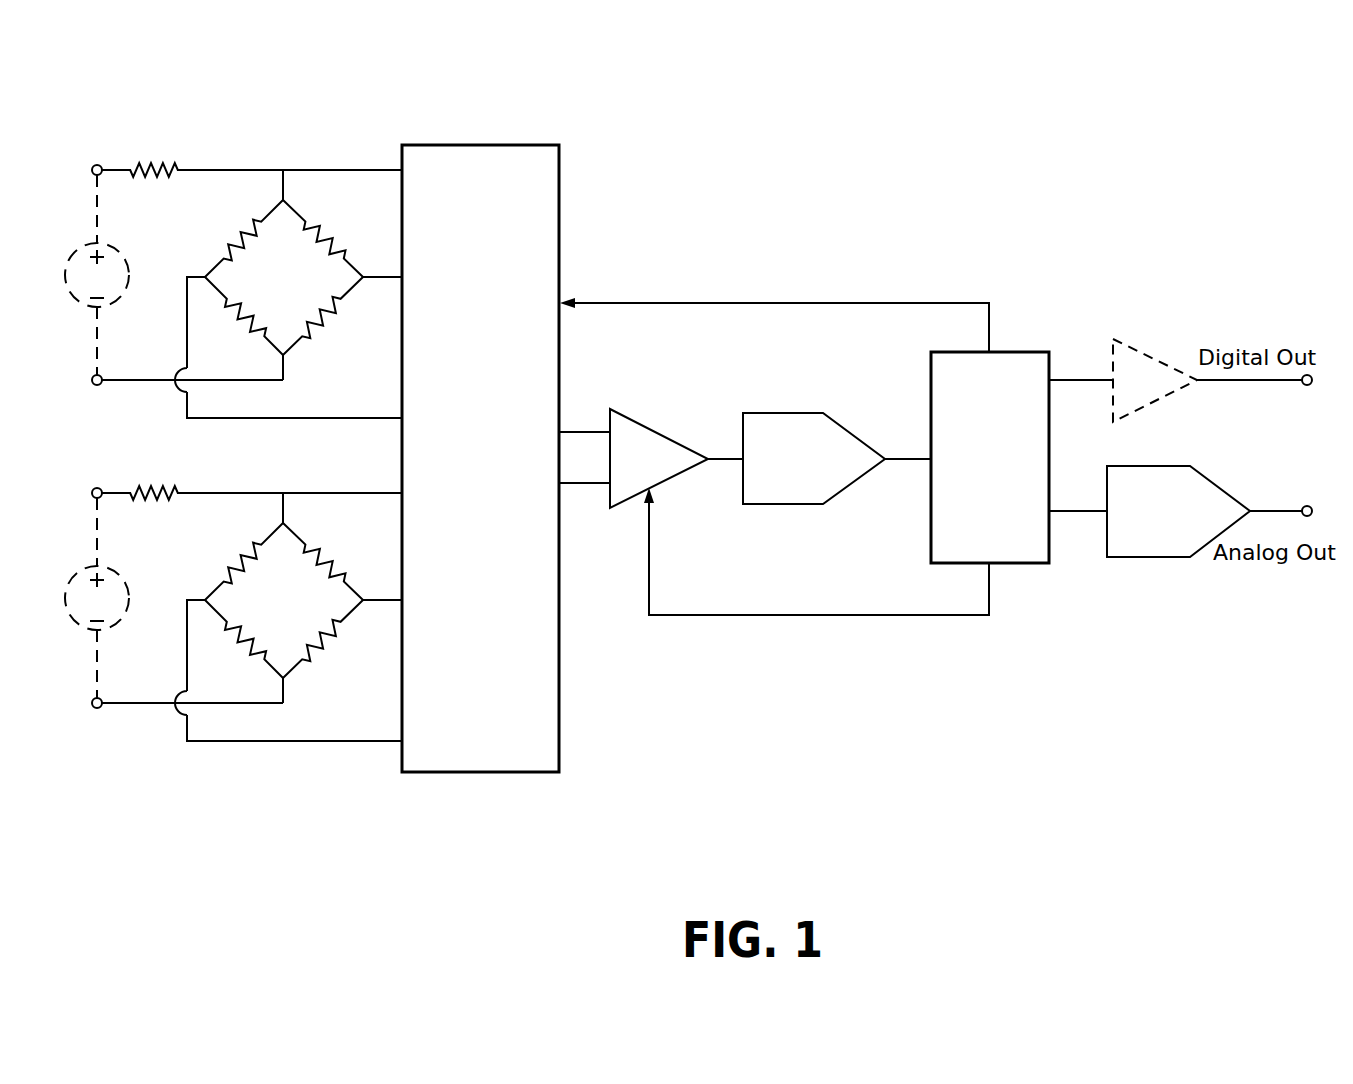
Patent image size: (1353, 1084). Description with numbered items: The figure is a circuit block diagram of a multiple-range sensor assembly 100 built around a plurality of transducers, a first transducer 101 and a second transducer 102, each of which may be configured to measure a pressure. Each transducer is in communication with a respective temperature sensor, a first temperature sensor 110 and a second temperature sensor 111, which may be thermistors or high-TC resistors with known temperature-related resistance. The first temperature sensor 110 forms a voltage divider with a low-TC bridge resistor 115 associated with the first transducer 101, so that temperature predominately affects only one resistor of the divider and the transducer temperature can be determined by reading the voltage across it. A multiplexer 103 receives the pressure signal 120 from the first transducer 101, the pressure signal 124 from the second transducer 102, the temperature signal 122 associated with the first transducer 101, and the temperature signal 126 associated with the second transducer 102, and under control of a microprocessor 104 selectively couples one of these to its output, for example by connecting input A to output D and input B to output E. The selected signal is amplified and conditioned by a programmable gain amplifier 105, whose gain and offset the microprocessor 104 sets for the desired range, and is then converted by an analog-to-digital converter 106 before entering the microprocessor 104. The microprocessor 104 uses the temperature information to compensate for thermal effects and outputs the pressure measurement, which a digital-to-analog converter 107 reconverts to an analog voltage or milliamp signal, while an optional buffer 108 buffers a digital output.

The multiple-range sensor assembly 100 is at (795, 110).
The first transducer 101 is at (295, 275).
The second transducer 102 is at (284, 600).
The multiplexer 103 is at (502, 182).
The microprocessor 104 is at (1007, 396).
The programmable gain amplifier 105 is at (625, 414).
The analog-to-digital converter 106 is at (812, 447).
The digital-to-analog converter 107 is at (1179, 502).
The buffer 108 is at (1165, 391).
The first temperature sensor 110 is at (150, 163).
The second temperature sensor 111 is at (170, 471).
The bridge resistor 115 is at (313, 221).
The pressure signal 120 is at (375, 290).
The temperature signal 122 is at (430, 189).
The pressure signal 124 is at (345, 673).
The temperature signal 126 is at (410, 509).